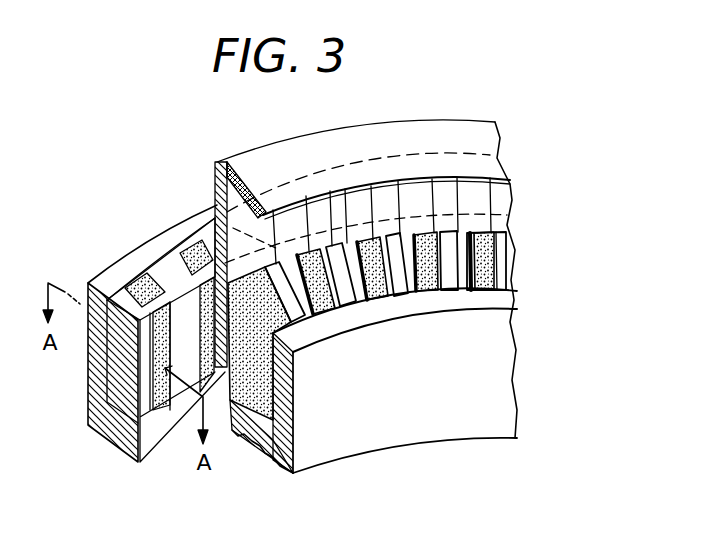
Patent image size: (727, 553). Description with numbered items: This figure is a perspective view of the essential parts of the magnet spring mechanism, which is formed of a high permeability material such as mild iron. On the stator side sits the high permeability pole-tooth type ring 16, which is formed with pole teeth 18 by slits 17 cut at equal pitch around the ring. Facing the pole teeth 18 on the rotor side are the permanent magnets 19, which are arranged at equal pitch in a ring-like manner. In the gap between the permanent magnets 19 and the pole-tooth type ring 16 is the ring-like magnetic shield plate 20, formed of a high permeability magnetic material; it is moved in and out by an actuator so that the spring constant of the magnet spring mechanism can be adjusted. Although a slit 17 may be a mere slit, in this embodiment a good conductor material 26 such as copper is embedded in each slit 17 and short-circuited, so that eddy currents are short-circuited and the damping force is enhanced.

The high permeability pole-tooth type ring 16 is at (155, 258).
The slit 17 is at (130, 287).
The pole tooth 18 is at (172, 258).
The permanent magnet 19 is at (250, 270).
The ring-like magnetic shield plate 20 is at (467, 142).
The good conductor material 26 is at (140, 285).